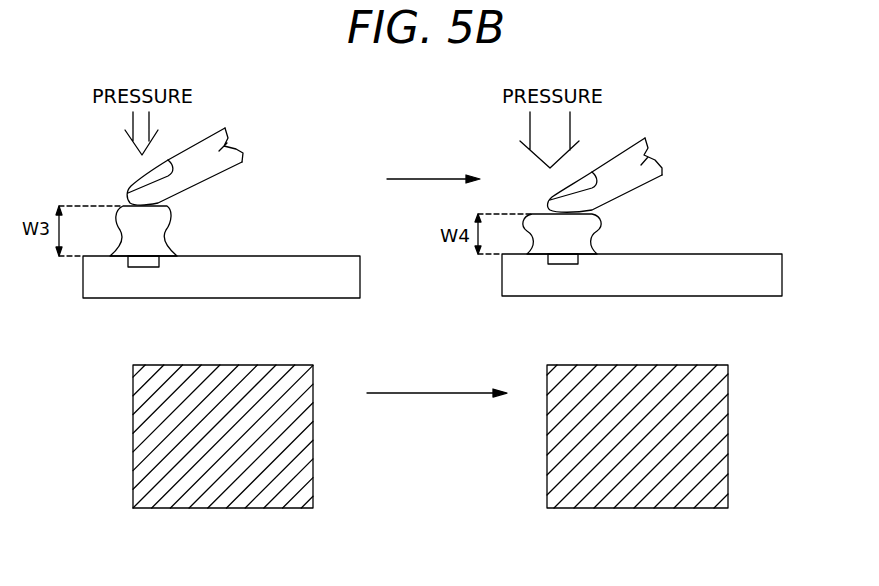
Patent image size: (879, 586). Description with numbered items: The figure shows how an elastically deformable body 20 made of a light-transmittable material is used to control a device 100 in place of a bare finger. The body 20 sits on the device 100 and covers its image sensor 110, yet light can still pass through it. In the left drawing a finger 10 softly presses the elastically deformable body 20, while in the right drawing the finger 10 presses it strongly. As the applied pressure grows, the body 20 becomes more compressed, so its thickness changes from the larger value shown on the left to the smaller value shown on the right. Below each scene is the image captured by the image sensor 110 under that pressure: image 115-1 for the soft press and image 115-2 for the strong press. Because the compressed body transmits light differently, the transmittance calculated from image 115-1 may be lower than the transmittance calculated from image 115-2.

The finger 10 is at (229, 141).
The elastically deformable body 20 is at (171, 214).
The device 100 is at (302, 263).
The image sensor 110 is at (147, 270).
The image 115-1 is at (313, 428).
The image 115-2 is at (728, 428).